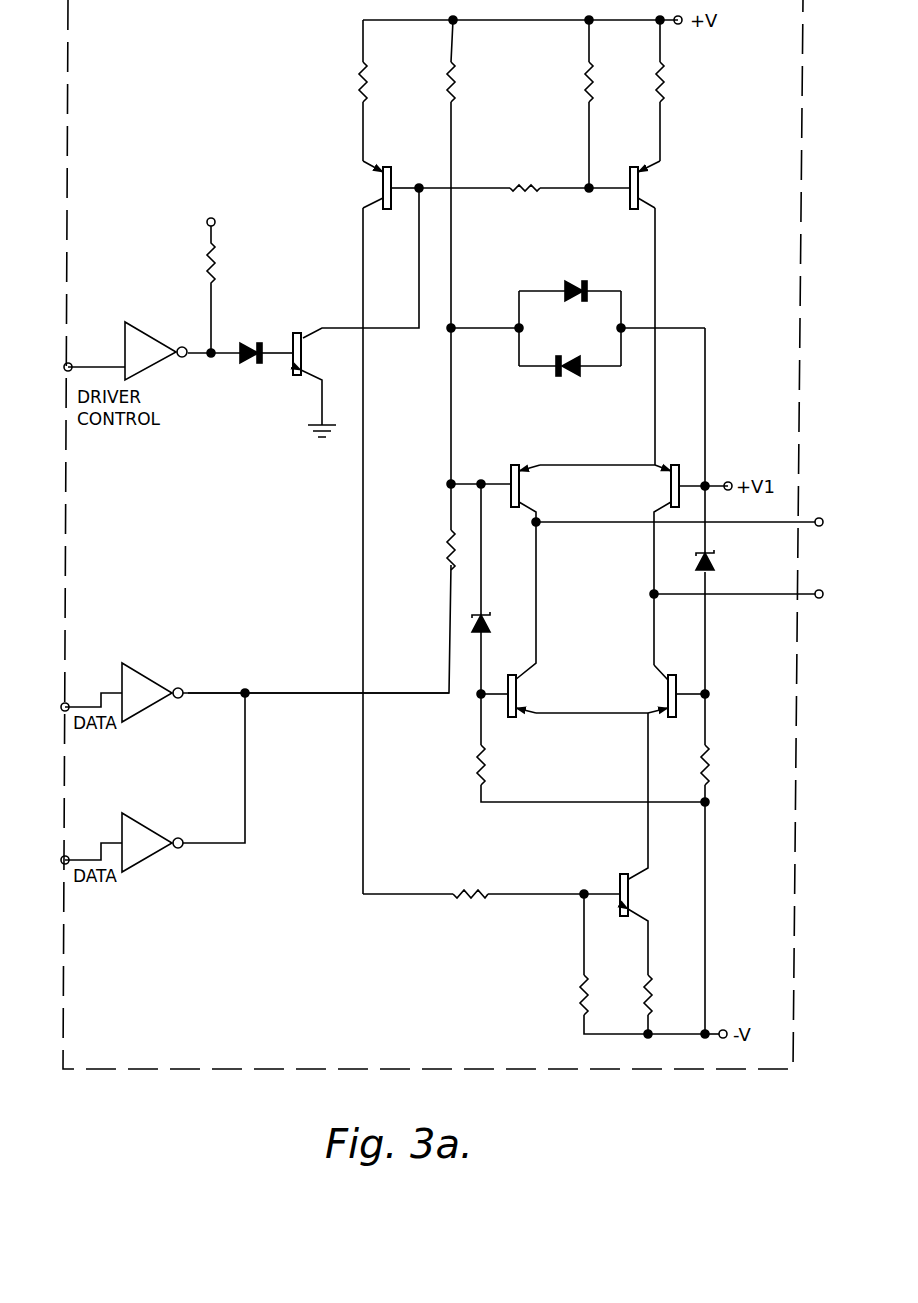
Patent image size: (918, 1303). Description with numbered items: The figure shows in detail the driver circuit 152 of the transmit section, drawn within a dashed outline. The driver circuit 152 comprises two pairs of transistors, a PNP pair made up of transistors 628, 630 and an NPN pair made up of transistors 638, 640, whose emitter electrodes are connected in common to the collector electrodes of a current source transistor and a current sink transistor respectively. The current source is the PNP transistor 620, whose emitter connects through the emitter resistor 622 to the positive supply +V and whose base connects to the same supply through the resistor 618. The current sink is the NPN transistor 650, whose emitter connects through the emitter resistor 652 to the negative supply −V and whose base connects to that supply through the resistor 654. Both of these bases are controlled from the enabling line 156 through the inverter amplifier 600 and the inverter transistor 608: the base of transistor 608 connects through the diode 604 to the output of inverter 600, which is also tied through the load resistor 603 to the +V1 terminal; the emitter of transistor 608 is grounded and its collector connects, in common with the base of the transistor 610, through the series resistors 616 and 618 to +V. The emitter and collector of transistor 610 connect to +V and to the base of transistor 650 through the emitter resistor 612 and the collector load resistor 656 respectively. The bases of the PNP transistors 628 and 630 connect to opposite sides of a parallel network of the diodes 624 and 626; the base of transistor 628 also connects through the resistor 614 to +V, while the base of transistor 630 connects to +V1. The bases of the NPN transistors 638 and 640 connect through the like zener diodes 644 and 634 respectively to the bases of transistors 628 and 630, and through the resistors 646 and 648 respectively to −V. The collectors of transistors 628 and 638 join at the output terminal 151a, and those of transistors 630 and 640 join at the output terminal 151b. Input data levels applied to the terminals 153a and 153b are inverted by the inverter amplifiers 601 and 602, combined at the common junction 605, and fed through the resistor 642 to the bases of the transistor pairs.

The driver circuit 152 is at (136, 1047).
The enabling line 156 is at (64, 368).
The input terminal 153a is at (68, 704).
The input terminal 153b is at (68, 857).
The output terminal 151a is at (826, 514).
The output terminal 151b is at (821, 598).
The inverter amplifier 600 is at (150, 328).
The inverter amplifier 601 is at (153, 678).
The inverter amplifier 602 is at (151, 828).
The load resistor 603 is at (221, 272).
The diode 604 is at (246, 343).
The common junction 605 is at (247, 689).
The inverter transistor 608 is at (309, 360).
The transistor 610 is at (373, 190).
The emitter resistor 612 is at (369, 90).
The resistor 614 is at (457, 90).
The resistor 616 is at (522, 182).
The resistor 618 is at (594, 90).
The PNP transistor 620 is at (647, 193).
The emitter resistor 622 is at (668, 86).
The diode 624 is at (578, 287).
The diode 626 is at (575, 372).
The PNP transistor 628 is at (526, 490).
The PNP transistor 630 is at (668, 488).
The zener diode 634 is at (712, 566).
The NPN transistor 638 is at (523, 693).
The NPN transistor 640 is at (663, 698).
The resistor 642 is at (441, 548).
The zener diode 644 is at (521, 608).
The resistor 646 is at (489, 762).
The resistor 648 is at (712, 762).
The NPN transistor 650 is at (637, 896).
The emitter resistor 652 is at (675, 973).
The resistor 654 is at (613, 973).
The collector load resistor 656 is at (468, 885).